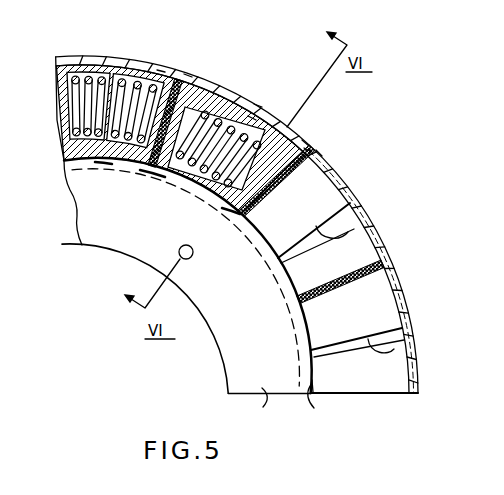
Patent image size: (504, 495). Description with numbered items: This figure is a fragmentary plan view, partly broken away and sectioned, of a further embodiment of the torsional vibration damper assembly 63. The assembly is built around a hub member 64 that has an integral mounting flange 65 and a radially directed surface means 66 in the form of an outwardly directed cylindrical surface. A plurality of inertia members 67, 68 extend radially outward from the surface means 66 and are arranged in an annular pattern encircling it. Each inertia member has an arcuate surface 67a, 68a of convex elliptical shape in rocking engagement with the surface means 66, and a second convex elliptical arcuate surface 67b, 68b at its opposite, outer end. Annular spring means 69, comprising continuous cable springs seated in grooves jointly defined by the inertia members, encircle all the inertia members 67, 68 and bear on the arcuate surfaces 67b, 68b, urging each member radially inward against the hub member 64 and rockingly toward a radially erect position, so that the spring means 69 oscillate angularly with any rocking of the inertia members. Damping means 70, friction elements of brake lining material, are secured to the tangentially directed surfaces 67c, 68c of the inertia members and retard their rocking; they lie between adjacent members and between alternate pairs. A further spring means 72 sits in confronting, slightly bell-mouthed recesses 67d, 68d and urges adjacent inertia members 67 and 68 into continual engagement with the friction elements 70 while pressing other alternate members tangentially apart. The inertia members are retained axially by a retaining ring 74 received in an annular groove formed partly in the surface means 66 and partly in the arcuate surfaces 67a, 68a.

The torsional vibration damper assembly 63 is at (200, 323).
The hub member 64 is at (316, 406).
The mounting flange 65 is at (187, 296).
The radially directed surface means 66 is at (210, 212).
The inertia member 67 is at (77, 57).
The arcuate surface 67a is at (153, 176).
The second arcuate surface 67b is at (188, 75).
The tangentially directed surface 67c is at (233, 97).
The recess 67d is at (258, 105).
The inertia member 68 is at (129, 60).
The arcuate surface 68a is at (231, 216).
The second arcuate surface 68b is at (252, 118).
The tangentially directed surface 68c is at (161, 72).
The recess 68d is at (308, 150).
The annular spring means 69 is at (306, 142).
The damping means 70 is at (142, 167).
The spring means 72 is at (105, 62).
The retaining member or ring 74 is at (103, 160).